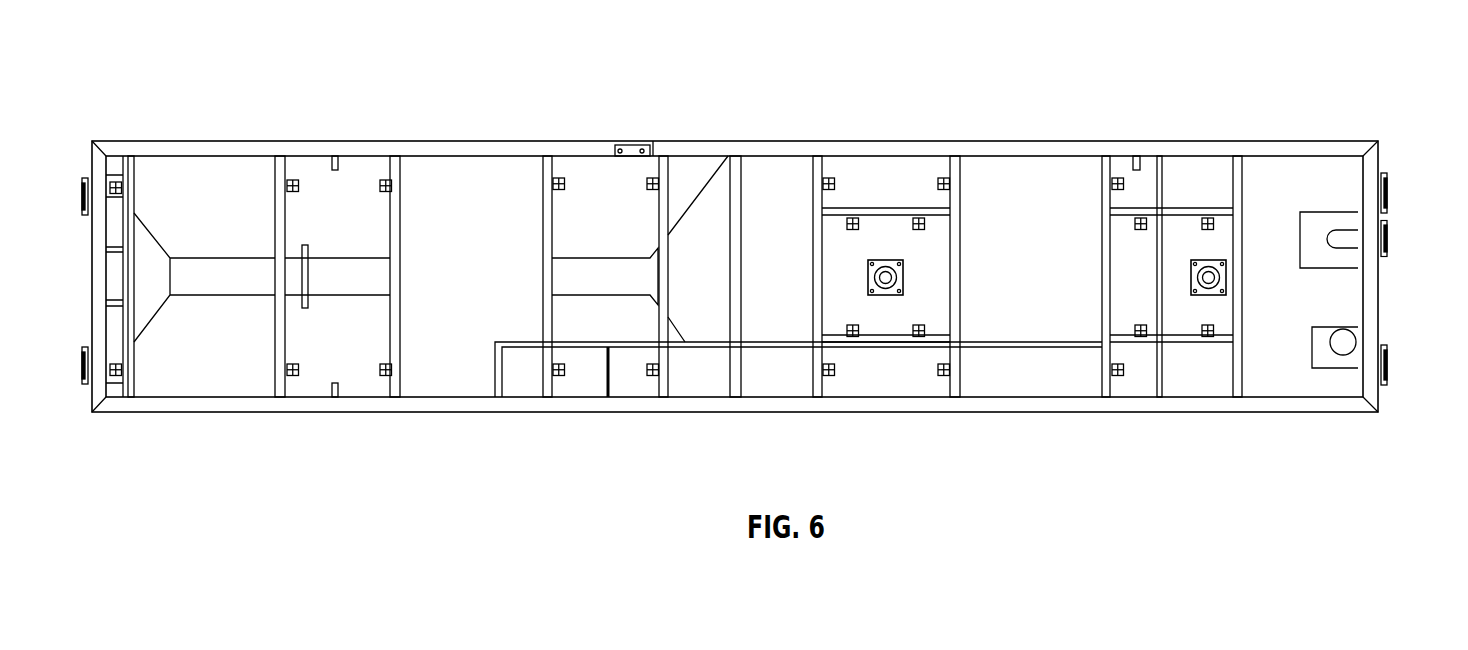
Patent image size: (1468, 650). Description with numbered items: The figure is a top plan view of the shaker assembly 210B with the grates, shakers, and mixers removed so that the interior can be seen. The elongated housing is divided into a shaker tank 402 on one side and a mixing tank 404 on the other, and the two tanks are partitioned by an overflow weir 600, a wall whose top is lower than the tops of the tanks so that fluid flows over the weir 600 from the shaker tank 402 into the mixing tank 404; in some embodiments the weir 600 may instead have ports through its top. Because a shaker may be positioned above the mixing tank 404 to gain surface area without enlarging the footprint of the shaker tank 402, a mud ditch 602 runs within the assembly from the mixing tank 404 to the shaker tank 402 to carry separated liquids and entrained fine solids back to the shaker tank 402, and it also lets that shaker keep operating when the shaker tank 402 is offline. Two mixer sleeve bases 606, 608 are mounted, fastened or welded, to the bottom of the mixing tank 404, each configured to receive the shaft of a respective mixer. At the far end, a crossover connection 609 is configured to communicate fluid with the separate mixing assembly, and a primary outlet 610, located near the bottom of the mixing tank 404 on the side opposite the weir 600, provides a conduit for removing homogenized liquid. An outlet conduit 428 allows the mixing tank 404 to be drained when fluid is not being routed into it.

The equipment container 210B is at (360, 88).
The shaker tank 402 is at (214, 180).
The mixing tank 404 is at (1038, 178).
The overflow weir 600 is at (735, 167).
The mud ditch 602 is at (1040, 382).
The mixer sleeve base 606 is at (886, 260).
The mixer sleeve base 608 is at (1208, 262).
The crossover connection 609 is at (1390, 192).
The primary outlet 610 is at (1340, 257).
The outlet conduit 428 is at (1350, 360).